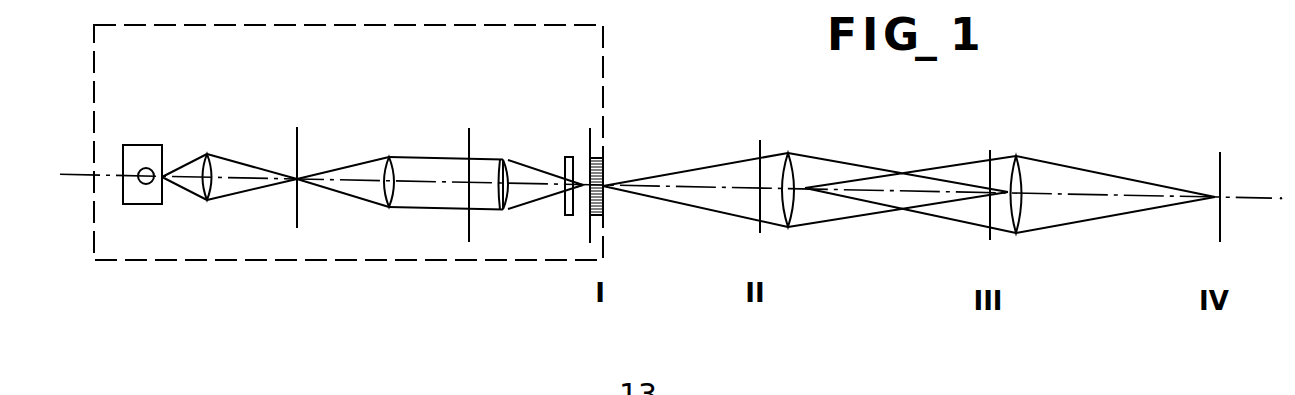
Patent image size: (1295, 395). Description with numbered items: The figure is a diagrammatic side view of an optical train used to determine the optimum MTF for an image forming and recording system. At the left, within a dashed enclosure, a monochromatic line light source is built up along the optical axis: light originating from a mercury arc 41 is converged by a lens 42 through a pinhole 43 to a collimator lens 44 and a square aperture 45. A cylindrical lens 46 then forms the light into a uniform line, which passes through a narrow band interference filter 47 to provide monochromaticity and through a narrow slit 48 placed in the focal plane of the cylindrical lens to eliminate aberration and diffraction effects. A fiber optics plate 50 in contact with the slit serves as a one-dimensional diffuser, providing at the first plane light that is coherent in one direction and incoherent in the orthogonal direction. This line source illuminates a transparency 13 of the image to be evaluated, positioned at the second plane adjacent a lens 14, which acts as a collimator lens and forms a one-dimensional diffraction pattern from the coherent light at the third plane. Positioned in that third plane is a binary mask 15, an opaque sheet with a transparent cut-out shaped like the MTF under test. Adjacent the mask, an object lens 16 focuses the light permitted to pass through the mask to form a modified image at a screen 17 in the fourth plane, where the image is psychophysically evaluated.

The transparency 13 is at (760, 143).
The lens 14 is at (790, 153).
The binary mask 15 is at (989, 148).
The lens 16 is at (1017, 156).
The screen 17 is at (1221, 162).
The mercury arc 41 is at (142, 144).
The lens 42 is at (209, 153).
The pinhole 43 is at (298, 142).
The collimator lens 44 is at (392, 155).
The square aperture 45 is at (467, 225).
The cylindrical lens 46 is at (501, 214).
The narrow band interference filter 47 is at (572, 216).
The narrow slit 48 is at (592, 233).
The fiber optics plate 50 is at (604, 163).